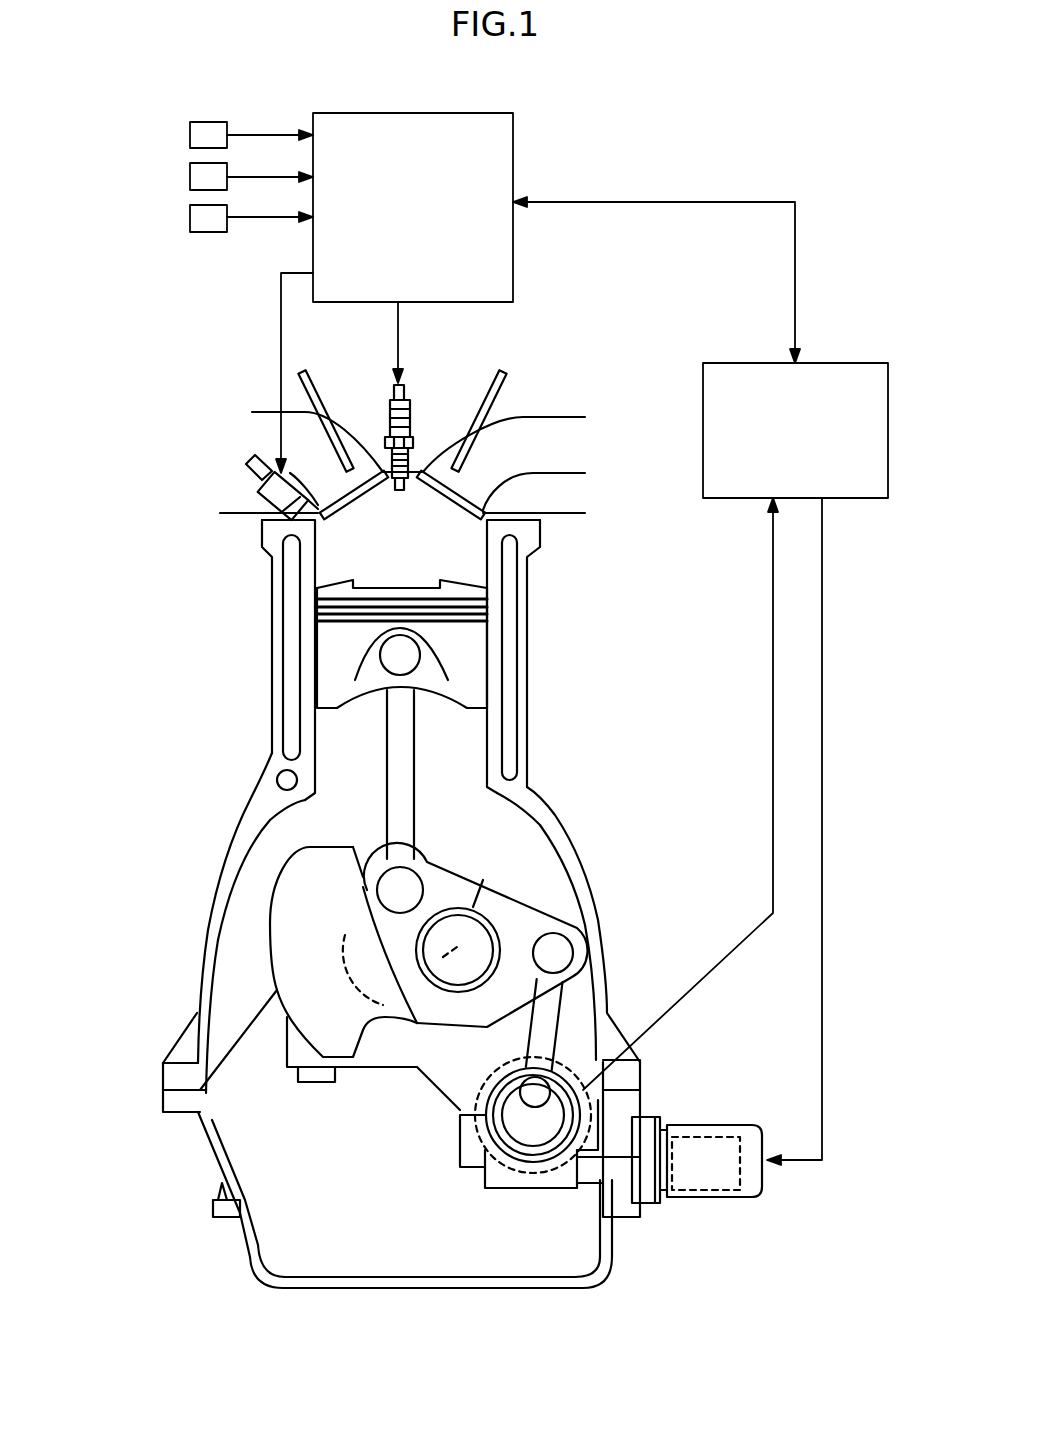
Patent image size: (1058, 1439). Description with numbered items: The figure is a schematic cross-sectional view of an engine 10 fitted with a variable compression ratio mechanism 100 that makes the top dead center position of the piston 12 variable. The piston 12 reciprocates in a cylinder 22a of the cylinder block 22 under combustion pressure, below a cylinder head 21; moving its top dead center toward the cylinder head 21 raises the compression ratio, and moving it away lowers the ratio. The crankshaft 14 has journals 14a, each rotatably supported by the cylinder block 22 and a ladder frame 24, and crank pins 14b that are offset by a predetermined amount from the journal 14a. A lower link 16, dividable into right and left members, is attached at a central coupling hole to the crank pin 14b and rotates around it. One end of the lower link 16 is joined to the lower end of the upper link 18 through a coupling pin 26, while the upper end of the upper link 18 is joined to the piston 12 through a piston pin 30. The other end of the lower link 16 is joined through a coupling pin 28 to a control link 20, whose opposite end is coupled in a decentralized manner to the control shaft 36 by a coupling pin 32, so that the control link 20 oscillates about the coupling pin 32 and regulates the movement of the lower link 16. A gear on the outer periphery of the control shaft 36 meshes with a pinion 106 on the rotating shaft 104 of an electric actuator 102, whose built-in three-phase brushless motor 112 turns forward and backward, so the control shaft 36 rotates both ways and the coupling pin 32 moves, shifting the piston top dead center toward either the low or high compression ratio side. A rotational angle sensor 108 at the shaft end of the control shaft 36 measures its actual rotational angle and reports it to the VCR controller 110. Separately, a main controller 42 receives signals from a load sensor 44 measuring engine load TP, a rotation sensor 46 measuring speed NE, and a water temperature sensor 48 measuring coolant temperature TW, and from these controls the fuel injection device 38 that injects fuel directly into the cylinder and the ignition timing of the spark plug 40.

The engine 10 is at (115, 290).
The piston 12 is at (477, 687).
The crankshaft 14 is at (293, 1007).
The journal 14a is at (340, 937).
The crank pin 14b is at (440, 967).
The lower link 16 is at (500, 905).
The upper link 18 is at (417, 813).
The control link 20 is at (553, 1007).
The cylinder head 21 is at (567, 513).
The cylinder block 22 is at (530, 747).
The cylinder 22a is at (328, 570).
The ladder frame 24 is at (363, 1060).
The coupling pin 26 is at (380, 890).
The coupling pin 28 is at (557, 950).
The piston pin 30 is at (395, 655).
The coupling pin 32 is at (475, 1135).
The control shaft 36 is at (523, 1150).
The fuel injection device 38 is at (264, 480).
The spark plug 40 is at (408, 432).
The main controller 42 is at (515, 183).
The load sensor 44 is at (190, 134).
The rotation sensor 46 is at (190, 179).
The water temperature sensor 48 is at (190, 226).
The variable compression ratio mechanism 100 is at (735, 1054).
The electric actuator 102 is at (713, 1200).
The rotating shaft 104 is at (592, 1177).
The pinion 106 is at (613, 1223).
The rotational angle sensor 108 is at (485, 1190).
The VCR controller 110 is at (722, 363).
The brushless motor 112 is at (692, 1192).